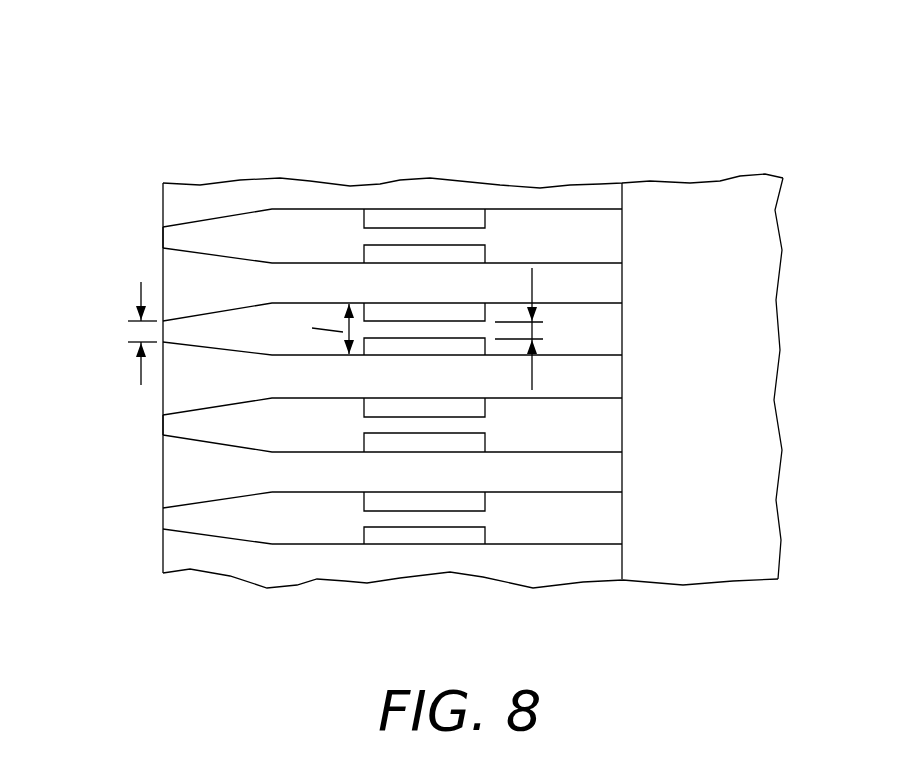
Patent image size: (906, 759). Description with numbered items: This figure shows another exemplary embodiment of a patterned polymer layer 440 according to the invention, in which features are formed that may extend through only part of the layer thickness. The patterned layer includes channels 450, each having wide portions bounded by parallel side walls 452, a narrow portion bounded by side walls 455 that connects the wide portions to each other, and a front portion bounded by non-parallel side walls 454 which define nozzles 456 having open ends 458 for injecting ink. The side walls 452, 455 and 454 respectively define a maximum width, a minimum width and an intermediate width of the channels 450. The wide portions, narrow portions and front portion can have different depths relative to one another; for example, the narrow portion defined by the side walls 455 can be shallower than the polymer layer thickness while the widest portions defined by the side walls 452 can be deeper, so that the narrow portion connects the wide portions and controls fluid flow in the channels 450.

The waveguide device 440 is at (631, 132).
The channels 450 is at (532, 545).
The parallel side walls 452 is at (597, 492).
The non-parallel side walls 454 is at (197, 502).
The side walls 455 is at (393, 502).
The nozzles 456 is at (181, 333).
The open ends 458 is at (163, 237).